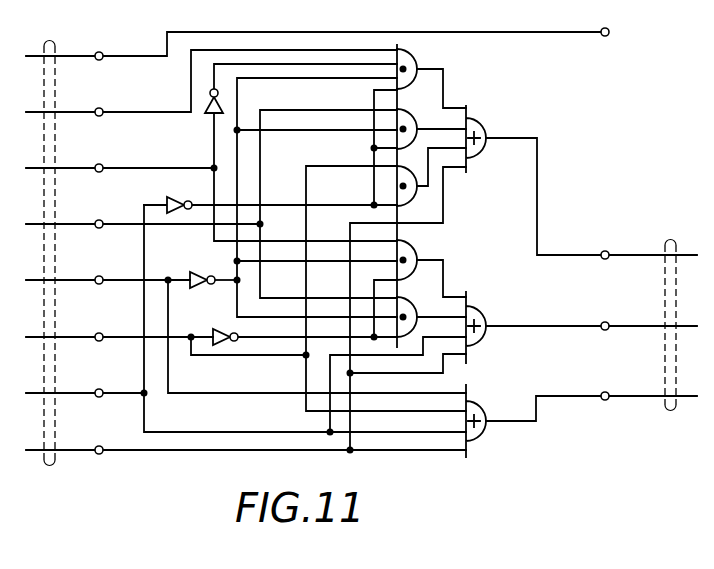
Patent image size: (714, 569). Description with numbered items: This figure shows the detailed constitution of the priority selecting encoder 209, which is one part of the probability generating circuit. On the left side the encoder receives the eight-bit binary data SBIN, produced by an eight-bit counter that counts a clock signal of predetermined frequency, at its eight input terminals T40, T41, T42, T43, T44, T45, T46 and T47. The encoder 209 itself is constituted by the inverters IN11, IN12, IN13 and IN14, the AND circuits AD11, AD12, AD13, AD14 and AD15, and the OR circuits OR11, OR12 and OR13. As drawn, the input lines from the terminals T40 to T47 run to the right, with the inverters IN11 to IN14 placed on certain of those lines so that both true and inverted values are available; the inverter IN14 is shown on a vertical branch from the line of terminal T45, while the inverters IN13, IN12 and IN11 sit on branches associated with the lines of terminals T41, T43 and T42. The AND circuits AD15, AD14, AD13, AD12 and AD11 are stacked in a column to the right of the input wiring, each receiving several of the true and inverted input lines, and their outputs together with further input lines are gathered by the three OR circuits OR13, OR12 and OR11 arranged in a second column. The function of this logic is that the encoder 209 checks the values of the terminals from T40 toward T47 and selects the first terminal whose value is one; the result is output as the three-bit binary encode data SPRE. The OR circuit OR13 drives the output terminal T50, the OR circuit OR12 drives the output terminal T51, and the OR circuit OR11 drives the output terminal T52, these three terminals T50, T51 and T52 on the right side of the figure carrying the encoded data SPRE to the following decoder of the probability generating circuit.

The terminal T47 is at (102, 60).
The terminal T46 is at (102, 116).
The terminal T45 is at (102, 172).
The terminal T44 is at (102, 228).
The terminal T43 is at (102, 284).
The terminal T42 is at (102, 341).
The terminal T41 is at (102, 397).
The terminal T40 is at (102, 454).
The terminal T50 is at (608, 251).
The terminal T51 is at (608, 322).
The terminal T52 is at (608, 392).
The inverter IN14 is at (210, 118).
The inverter IN13 is at (176, 196).
The inverter IN12 is at (200, 272).
The inverter IN11 is at (218, 327).
The AND circuit AD15 is at (418, 53).
The AND circuit AD14 is at (418, 108).
The AND circuit AD13 is at (418, 190).
The AND circuit AD12 is at (418, 247).
The AND circuit AD11 is at (420, 300).
The OR circuit OR13 is at (487, 142).
The OR circuit OR12 is at (487, 332).
The OR circuit OR11 is at (489, 427).
The binary data SBIN is at (47, 466).
The binary encode data SPRE is at (669, 411).
The priority selecting encoder 209 is at (605, 165).